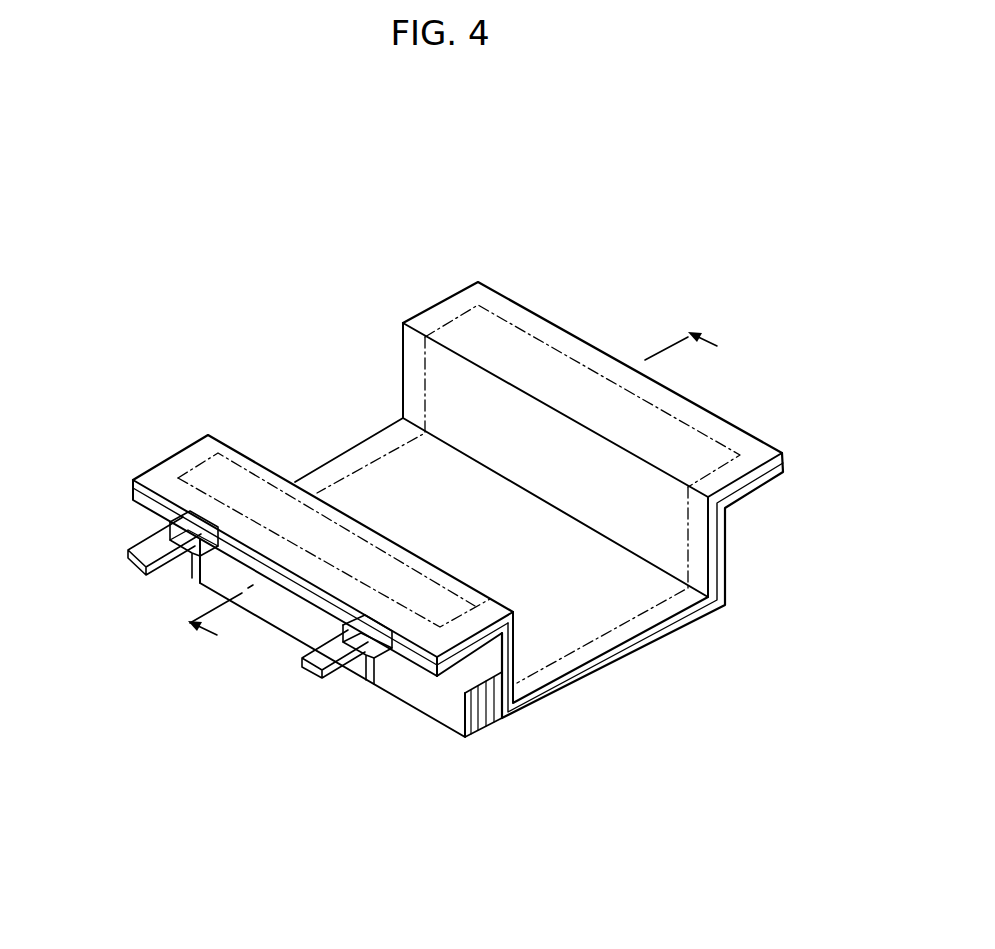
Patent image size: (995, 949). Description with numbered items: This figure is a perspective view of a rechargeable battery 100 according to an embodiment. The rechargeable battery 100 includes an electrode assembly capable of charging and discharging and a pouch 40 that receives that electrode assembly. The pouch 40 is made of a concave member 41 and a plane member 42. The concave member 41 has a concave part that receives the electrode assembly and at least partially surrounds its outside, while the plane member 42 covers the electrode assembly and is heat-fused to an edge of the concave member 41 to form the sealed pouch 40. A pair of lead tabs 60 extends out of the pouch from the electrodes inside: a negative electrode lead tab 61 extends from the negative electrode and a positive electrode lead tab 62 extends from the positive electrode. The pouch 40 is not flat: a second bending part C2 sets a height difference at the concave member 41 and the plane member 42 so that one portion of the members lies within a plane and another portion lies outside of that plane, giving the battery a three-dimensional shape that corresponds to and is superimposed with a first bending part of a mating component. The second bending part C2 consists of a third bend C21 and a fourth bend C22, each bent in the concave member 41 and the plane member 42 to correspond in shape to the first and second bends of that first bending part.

The rechargeable battery 100 is at (320, 226).
The second bending part C2 is at (738, 692).
The third bend C21 is at (727, 607).
The fourth bend C22 is at (729, 515).
The pouch 40 is at (288, 718).
The concave member 41 is at (405, 652).
The plane member 42 is at (372, 655).
The lead tabs 60 is at (97, 657).
The negative electrode lead tab 61 is at (148, 562).
The positive electrode lead tab 62 is at (300, 657).